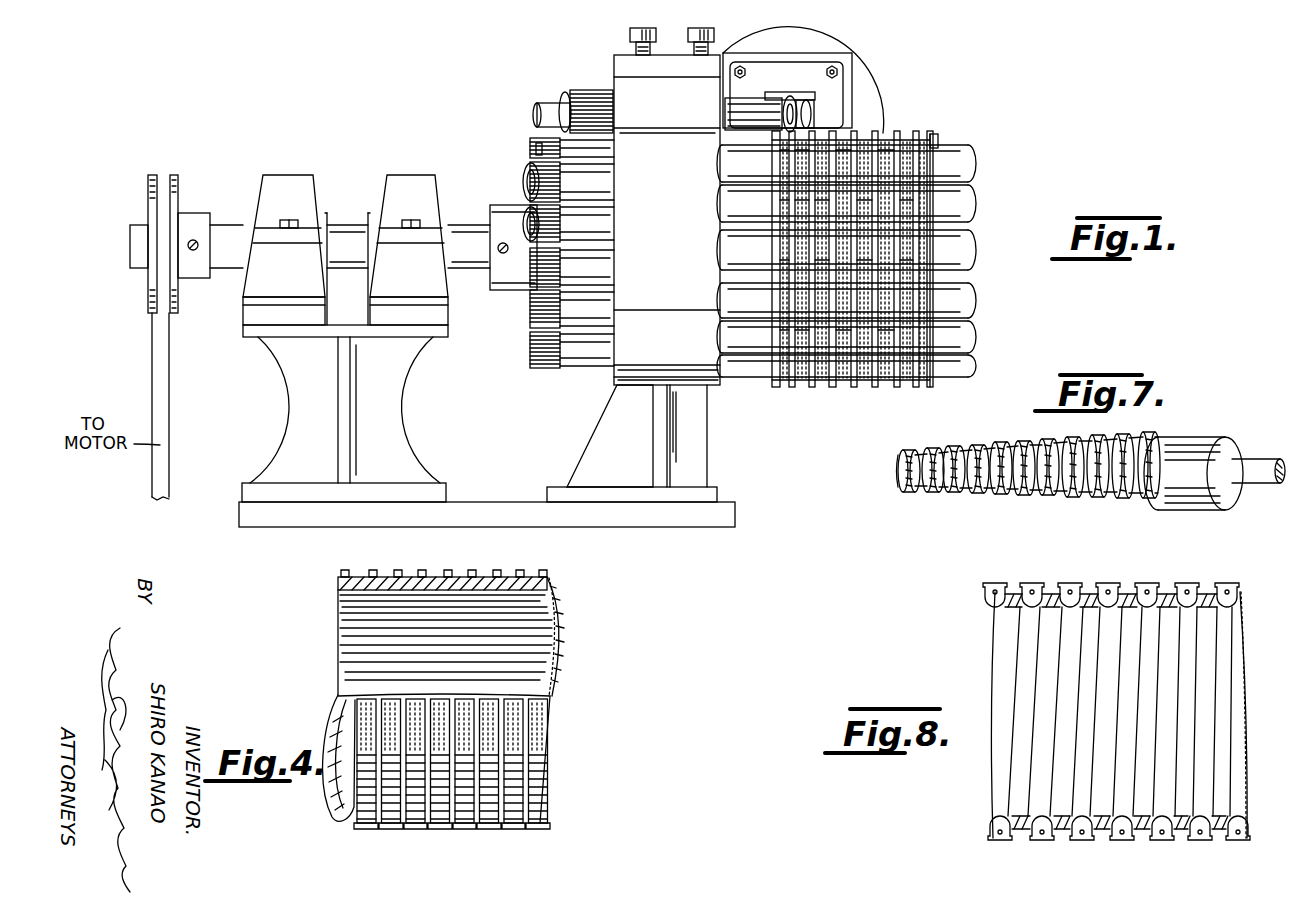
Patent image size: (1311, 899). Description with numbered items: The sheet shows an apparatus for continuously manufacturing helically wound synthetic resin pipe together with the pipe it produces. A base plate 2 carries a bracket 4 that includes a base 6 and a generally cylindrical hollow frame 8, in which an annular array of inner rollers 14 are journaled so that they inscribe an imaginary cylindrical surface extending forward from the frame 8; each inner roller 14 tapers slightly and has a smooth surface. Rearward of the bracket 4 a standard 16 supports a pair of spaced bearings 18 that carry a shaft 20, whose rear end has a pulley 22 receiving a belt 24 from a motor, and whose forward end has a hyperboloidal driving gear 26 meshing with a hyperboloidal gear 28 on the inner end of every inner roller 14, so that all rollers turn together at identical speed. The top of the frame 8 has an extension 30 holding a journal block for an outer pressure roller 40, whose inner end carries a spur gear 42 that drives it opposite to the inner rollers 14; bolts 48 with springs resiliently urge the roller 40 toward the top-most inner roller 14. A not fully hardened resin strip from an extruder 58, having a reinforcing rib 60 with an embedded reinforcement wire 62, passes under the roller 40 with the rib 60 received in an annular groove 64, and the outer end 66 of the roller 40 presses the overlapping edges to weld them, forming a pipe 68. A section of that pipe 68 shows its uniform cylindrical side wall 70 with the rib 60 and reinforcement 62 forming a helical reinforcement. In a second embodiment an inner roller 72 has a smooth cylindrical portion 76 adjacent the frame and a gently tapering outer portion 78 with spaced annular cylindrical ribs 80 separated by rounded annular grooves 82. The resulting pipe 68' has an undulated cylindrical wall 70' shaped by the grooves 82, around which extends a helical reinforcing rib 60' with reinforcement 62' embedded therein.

In FIG. 1, the base plate 2 is at (465, 508).
In FIG. 1, the bracket 4 is at (610, 382).
In FIG. 1, the base 6 is at (702, 430).
In FIG. 1, the hollow frame 8 is at (646, 349).
In FIG. 1, the inner roller 14 is at (972, 204).
In FIG. 1, the standard 16 is at (393, 407).
In FIG. 1, the bearings 18 is at (294, 178).
In FIG. 1, the shaft 20 is at (350, 232).
In FIG. 1, the pulley 22 is at (178, 193).
In FIG. 1, the belt 24 is at (160, 351).
In FIG. 1, the hyperboloidal driving gear 26 is at (497, 290).
In FIG. 1, the hyperboloidal gear 28 is at (530, 155).
In FIG. 1, the extension 30 is at (622, 90).
In FIG. 1, the outer pressure roller 40 is at (746, 110).
In FIG. 1, the spur gear 42 is at (572, 96).
In FIG. 1, the bolts 48 is at (700, 26).
In FIG. 1, the extruder 58 is at (838, 44).
In FIG. 1, the reinforcing rib 60 is at (852, 274).
In FIG. 4, the reinforcing rib 60 is at (442, 563).
In FIG. 4, the reinforcement wire 62 is at (495, 557).
In FIG. 1, the annular groove 64 is at (790, 104).
In FIG. 1, the outer end of outer roller 66 is at (808, 118).
In FIG. 1, the pipe 68 is at (952, 237).
In FIG. 4, the pipe 68 is at (570, 621).
In FIG. 4, the side wall 70 is at (420, 709).
In FIG. 7, the inner roller 72 is at (1200, 436).
In FIG. 7, the smooth cylindrical portion 76 is at (1180, 500).
In FIG. 7, the tapering outer portion 78 is at (1012, 500).
In FIG. 7, the annular cylindrical ribs 80 is at (948, 494).
In FIG. 7, the annular grooves 82 is at (982, 446).
In FIG. 8, the helical reinforcing rib 60' is at (1111, 580).
In FIG. 8, the reinforcement 62' is at (1112, 578).
In FIG. 8, the pipe 68' is at (1263, 698).
In FIG. 8, the undulated cylindrical wall 70' is at (1103, 716).